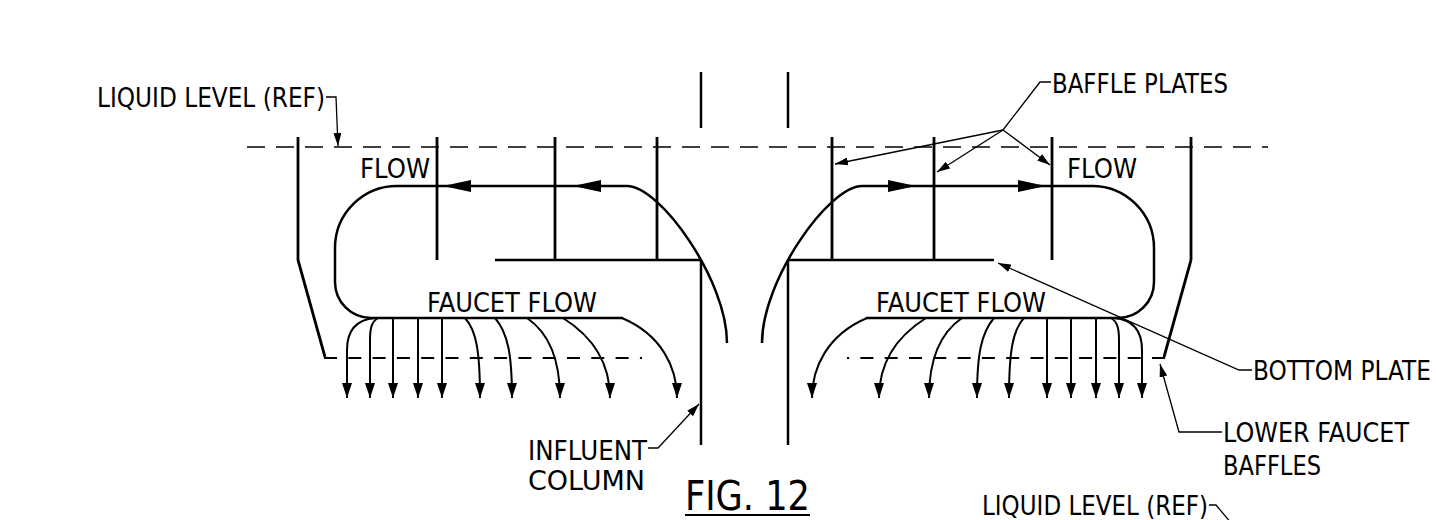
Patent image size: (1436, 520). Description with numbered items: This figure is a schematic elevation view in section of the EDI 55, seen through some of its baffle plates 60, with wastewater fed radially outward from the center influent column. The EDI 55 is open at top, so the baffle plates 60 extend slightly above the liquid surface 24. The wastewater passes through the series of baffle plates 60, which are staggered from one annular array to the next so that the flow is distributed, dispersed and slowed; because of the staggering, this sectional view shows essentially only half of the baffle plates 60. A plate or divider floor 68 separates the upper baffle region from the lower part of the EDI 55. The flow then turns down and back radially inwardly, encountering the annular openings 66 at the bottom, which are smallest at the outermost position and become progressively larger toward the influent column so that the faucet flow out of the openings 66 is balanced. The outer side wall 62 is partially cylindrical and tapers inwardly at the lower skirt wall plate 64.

The liquid surface 24 is at (1238, 145).
The EDI 55 is at (228, 194).
The baffle plates 60 is at (657, 160).
The side wall 62 is at (313, 318).
The lower skirt wall plate 64 is at (1188, 277).
The annular openings 66 is at (508, 370).
The divider floor 68 is at (873, 260).